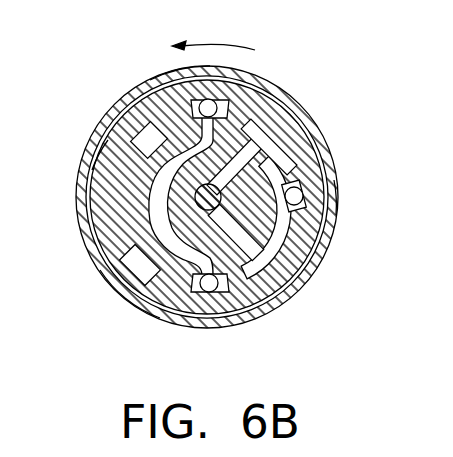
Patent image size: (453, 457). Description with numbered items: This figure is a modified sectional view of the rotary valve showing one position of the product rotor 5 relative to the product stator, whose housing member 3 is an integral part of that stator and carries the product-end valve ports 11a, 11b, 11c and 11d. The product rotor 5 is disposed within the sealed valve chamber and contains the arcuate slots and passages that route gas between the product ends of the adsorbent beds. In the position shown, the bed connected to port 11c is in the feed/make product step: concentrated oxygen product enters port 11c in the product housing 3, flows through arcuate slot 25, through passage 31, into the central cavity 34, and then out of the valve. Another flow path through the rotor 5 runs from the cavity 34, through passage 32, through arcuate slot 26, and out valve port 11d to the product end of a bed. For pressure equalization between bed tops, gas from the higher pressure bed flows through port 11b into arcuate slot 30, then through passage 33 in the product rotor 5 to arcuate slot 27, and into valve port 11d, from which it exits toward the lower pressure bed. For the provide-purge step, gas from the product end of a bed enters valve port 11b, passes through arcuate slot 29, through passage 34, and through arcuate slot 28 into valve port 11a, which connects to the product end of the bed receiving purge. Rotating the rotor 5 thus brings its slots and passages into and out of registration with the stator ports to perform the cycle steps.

The product housing member 3 is at (97, 280).
The product rotor 5 is at (228, 325).
The valve port 11a is at (120, 178).
The valve port 11b is at (185, 322).
The valve port 11c is at (330, 190).
The valve port 11d is at (187, 68).
The arcuate slot 25 is at (287, 232).
The arcuate slot 26 is at (268, 135).
The arcuate slot 27 is at (240, 80).
The arcuate slot 28 is at (140, 136).
The arcuate slot 29 is at (135, 290).
The arcuate slot 30 is at (155, 310).
The passage 31 is at (288, 268).
The passage 32 is at (300, 148).
The passage 33 is at (124, 250).
The central cavity 34 is at (105, 252).